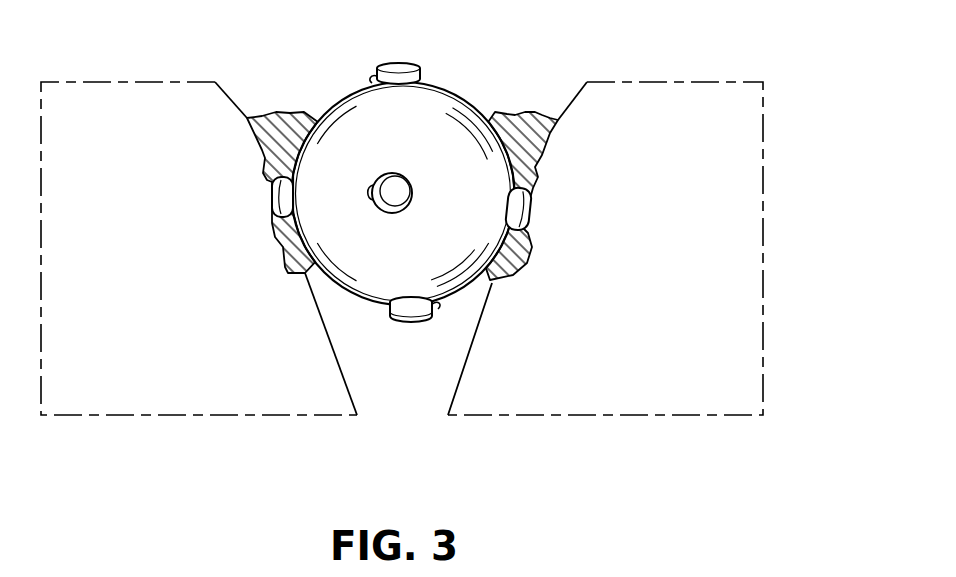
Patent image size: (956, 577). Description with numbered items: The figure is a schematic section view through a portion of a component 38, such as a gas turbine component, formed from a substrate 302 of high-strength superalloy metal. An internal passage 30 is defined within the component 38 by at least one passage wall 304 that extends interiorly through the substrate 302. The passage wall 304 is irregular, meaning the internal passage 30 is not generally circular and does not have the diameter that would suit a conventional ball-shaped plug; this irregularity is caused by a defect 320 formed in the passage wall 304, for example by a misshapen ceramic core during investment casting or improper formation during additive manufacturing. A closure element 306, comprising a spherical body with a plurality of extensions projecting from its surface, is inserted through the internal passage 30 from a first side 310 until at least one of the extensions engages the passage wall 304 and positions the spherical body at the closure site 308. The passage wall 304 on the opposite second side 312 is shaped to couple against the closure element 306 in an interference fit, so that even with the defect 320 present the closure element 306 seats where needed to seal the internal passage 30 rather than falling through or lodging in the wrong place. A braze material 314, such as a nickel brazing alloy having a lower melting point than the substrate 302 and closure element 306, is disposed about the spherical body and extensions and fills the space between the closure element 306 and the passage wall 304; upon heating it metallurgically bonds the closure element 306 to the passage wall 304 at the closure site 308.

The internal passage 30 is at (342, 239).
The component 38 is at (444, 272).
The substrate 302 is at (145, 273).
The passage wall 304 is at (565, 117).
The closure element 306 is at (390, 260).
The closure site 308 is at (268, 212).
The first side 310 is at (361, 150).
The opposite second side 312 is at (380, 410).
The braze material 314 is at (283, 128).
The defect 320 is at (448, 317).